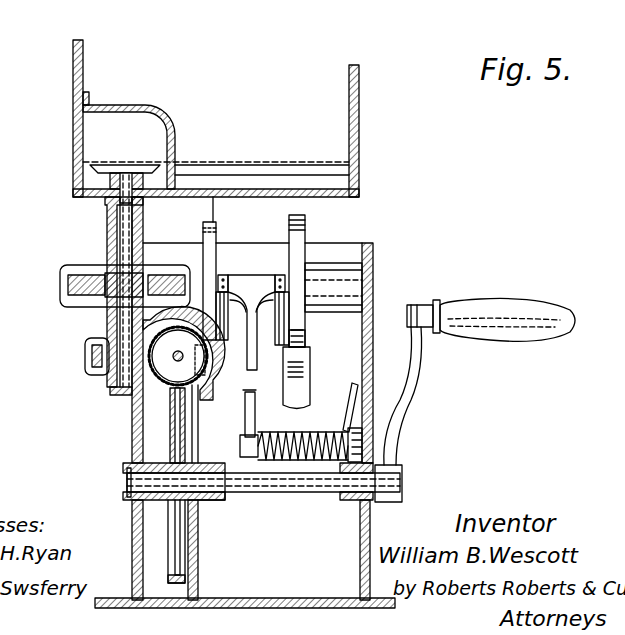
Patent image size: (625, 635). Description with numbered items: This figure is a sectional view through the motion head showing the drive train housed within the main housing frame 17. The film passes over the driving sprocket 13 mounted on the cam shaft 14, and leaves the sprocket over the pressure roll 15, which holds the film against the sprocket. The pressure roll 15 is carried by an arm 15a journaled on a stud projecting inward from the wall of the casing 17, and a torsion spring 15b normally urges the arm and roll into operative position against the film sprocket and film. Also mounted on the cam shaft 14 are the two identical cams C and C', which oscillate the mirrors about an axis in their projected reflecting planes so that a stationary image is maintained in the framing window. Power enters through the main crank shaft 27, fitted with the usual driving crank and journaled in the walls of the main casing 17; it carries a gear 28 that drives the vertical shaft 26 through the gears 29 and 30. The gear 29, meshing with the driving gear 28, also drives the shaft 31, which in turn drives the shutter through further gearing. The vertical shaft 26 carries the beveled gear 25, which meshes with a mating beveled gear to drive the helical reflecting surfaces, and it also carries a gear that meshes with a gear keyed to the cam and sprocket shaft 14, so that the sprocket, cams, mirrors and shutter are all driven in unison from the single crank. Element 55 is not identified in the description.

The driving sprocket 13 is at (224, 281).
The cam shaft 14 is at (252, 283).
The pressure roll 15 is at (305, 340).
The arm 15a is at (246, 398).
The torsion spring 15b is at (352, 395).
The main housing frame 17 is at (132, 443).
The beveled gear 25 is at (118, 166).
The vertical shaft 26 is at (120, 232).
The main crank shaft 27 is at (284, 492).
The gear 28 is at (168, 527).
The gear 29 is at (173, 361).
The gear 30 is at (85, 358).
The shaft 31 is at (118, 389).
The boss 55 is at (68, 289).
The cam C is at (193, 280).
The cam C' is at (311, 312).